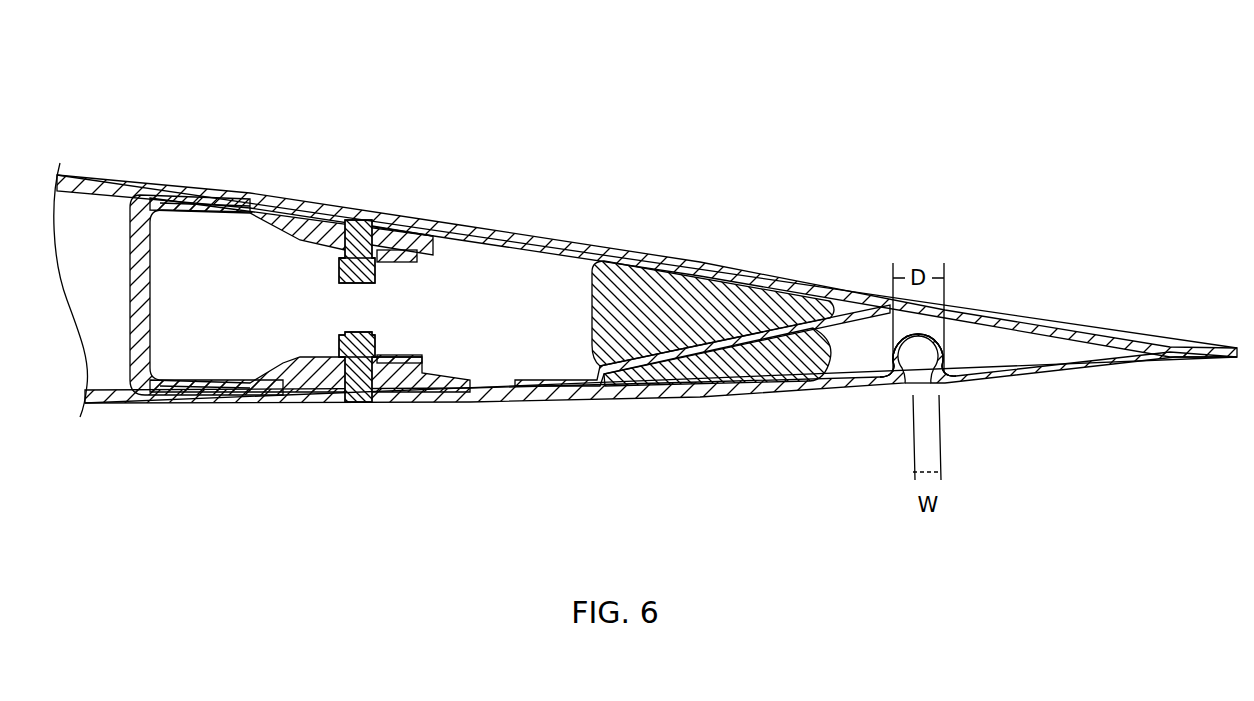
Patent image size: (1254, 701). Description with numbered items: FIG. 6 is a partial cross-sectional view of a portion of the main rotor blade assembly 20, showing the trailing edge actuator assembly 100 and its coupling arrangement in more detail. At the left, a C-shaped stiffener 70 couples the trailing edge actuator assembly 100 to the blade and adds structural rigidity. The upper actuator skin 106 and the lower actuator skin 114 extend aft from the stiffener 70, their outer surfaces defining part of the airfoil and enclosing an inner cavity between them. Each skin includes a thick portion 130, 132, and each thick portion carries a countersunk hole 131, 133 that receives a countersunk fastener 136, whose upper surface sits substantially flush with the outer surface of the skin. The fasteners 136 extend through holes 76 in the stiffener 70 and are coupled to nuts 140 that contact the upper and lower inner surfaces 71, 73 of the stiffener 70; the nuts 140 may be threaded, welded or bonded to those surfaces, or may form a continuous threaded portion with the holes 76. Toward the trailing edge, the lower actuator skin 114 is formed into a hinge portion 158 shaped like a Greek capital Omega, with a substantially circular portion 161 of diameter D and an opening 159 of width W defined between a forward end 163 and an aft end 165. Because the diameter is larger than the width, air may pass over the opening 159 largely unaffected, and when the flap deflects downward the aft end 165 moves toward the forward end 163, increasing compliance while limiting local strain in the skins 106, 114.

The main rotor blade assembly 20 is at (942, 50).
The trailing edge actuator assembly 100 is at (874, 144).
The stiffener 70 is at (130, 287).
The upper inner surface of stiffener 71 is at (290, 247).
The lower inner surface of stiffener 73 is at (288, 362).
The thick portion of upper actuator skin 130 is at (317, 222).
The countersunk hole in upper skin 131 is at (380, 220).
The thick portion of lower actuator skin 132 is at (320, 392).
The countersunk hole in lower skin 133 is at (377, 392).
The countersunk fastener 136 is at (377, 225).
The hole in stiffener 76 is at (430, 245).
The nut 140 is at (390, 352).
The upper actuator skin 106 is at (478, 222).
The lower actuator skin 114 is at (577, 400).
The hinge portion 158 is at (893, 416).
The opening 159 is at (918, 385).
The circular portion 161 is at (947, 353).
The forward end 163 is at (903, 388).
The aft end 165 is at (940, 387).